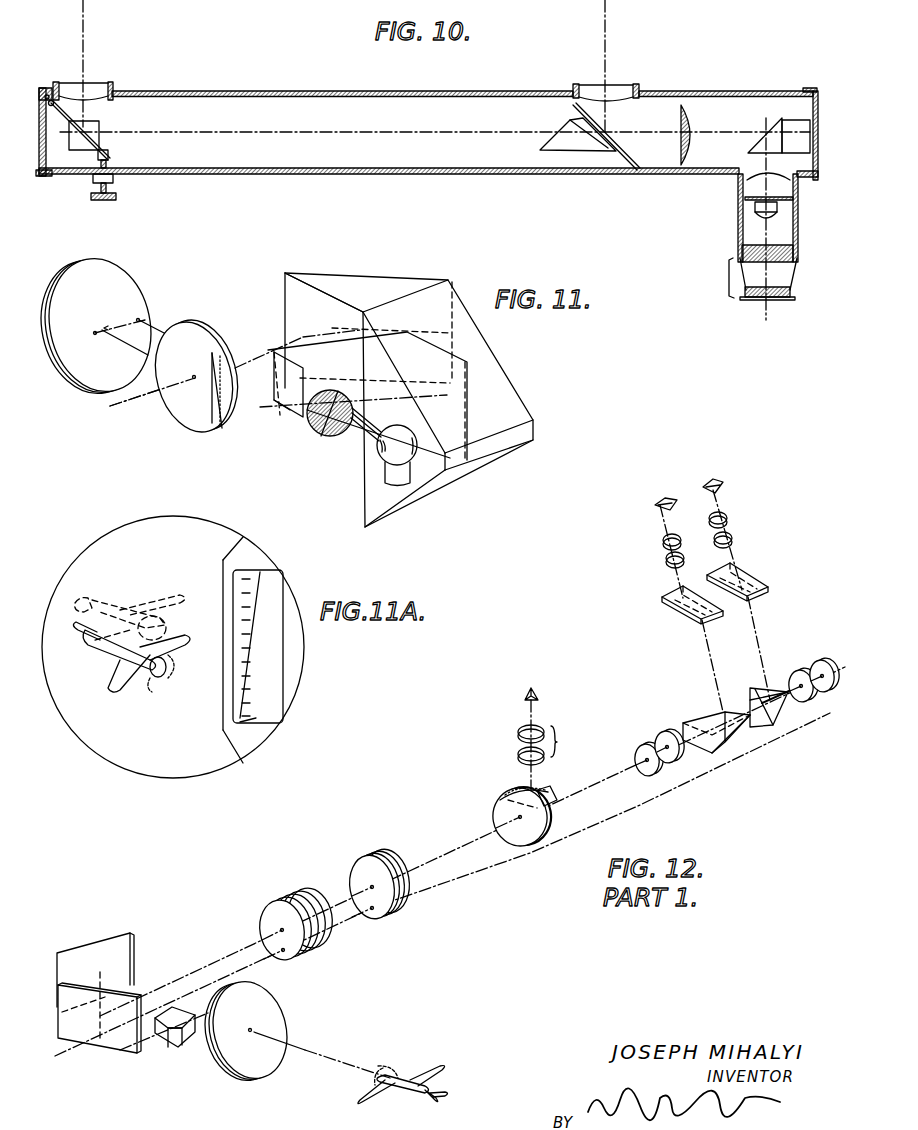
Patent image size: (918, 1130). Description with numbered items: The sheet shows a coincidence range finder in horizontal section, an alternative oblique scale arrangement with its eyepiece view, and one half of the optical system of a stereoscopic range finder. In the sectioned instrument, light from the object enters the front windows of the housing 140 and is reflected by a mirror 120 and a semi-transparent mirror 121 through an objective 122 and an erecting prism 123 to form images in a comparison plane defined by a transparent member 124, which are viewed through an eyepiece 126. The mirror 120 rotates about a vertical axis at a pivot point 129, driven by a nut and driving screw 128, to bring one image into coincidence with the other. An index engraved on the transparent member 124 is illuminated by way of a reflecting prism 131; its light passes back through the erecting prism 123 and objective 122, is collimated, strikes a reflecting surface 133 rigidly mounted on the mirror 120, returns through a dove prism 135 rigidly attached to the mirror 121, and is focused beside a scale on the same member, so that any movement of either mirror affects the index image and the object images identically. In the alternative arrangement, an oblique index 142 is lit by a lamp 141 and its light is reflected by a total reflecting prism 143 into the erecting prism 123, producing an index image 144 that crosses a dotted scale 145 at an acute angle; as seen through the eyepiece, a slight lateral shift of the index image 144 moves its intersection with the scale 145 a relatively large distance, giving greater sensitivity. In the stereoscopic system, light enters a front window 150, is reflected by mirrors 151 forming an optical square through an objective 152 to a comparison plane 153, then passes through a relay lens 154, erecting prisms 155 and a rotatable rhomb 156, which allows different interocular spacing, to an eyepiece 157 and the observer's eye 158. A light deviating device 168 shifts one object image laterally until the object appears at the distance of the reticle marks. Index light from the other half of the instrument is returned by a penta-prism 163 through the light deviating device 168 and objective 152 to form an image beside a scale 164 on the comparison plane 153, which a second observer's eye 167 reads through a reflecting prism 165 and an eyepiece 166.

In FIG. 10, the mirror 120 is at (90, 142).
In FIG. 10, the semi-transparent mirror 121 is at (628, 155).
In FIG. 10, the objective 122 is at (700, 112).
In FIG. 11, the objective 122 is at (130, 285).
In FIG. 10, the erecting prism 123 is at (793, 123).
In FIG. 11, the erecting prism 123 is at (395, 270).
In FIG. 10, the transparent member 124 is at (745, 197).
In FIG. 10, the eyepiece 126 is at (747, 272).
In FIG. 10, the nut and driving screw 128 is at (108, 189).
In FIG. 10, the pivot point 129 is at (48, 95).
In FIG. 10, the reflecting prism 131 is at (757, 207).
In FIG. 10, the reflecting surface 133 is at (96, 137).
In FIG. 10, the dove prism 135 is at (548, 150).
In FIG. 10, the housing 140 is at (340, 176).
In FIG. 11, the lamp 141 is at (380, 450).
In FIG. 11, the oblique index 142 is at (325, 430).
In FIG. 11, the total reflecting prism 143 is at (268, 412).
In FIG. 11, the index image 144 is at (222, 365).
In FIG. 11A, the index image 144 is at (238, 700).
In FIG. 11, the scale 145 is at (216, 425).
In FIG. 11A, the scale 145 is at (238, 722).
In FIG. 12, the front window 150 is at (283, 1022).
In FIG. 12, the mirrors 151 is at (90, 960).
In FIG. 12, the objective 152 is at (370, 853).
In FIG. 12, the comparison plane 153 is at (497, 812).
In FIG. 12, the relay lens 154 is at (662, 735).
In FIG. 12, the erecting prism 155 is at (753, 693).
In FIG. 12, the rotatable rhomb 156 is at (742, 598).
In FIG. 12, the eyepiece 157 is at (714, 518).
In FIG. 12, the eye 158 is at (705, 483).
In FIG. 12, the penta-prism 163 is at (174, 1046).
In FIG. 12, the scale 164 is at (510, 796).
In FIG. 12, the reflecting prism 165 is at (550, 790).
In FIG. 12, the eyepiece 166 is at (556, 743).
In FIG. 12, the eye 167 is at (536, 690).
In FIG. 12, the light deviating device 168 is at (278, 895).